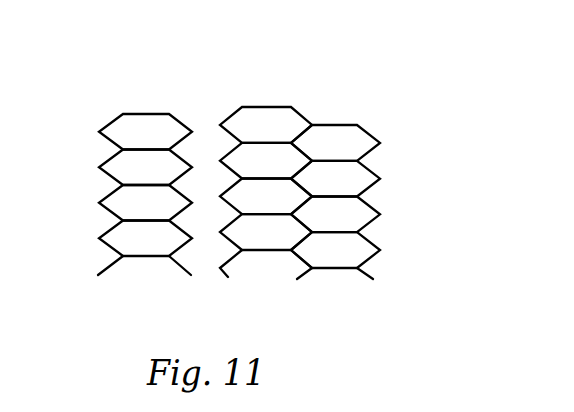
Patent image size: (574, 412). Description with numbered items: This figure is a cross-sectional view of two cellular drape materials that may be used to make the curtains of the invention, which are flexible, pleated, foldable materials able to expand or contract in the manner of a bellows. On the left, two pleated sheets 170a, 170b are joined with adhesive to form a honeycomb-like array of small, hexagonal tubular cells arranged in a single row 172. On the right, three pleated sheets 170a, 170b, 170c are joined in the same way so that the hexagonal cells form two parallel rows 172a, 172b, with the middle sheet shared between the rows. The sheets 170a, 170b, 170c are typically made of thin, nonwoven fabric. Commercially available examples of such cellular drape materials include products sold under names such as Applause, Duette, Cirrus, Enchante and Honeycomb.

The pleated sheet 170a is at (100, 129).
The pleated sheet 170b is at (179, 120).
The pleated sheet 170c is at (378, 209).
The single row 172 is at (144, 257).
The parallel row 172a is at (267, 251).
The parallel row 172b is at (337, 269).